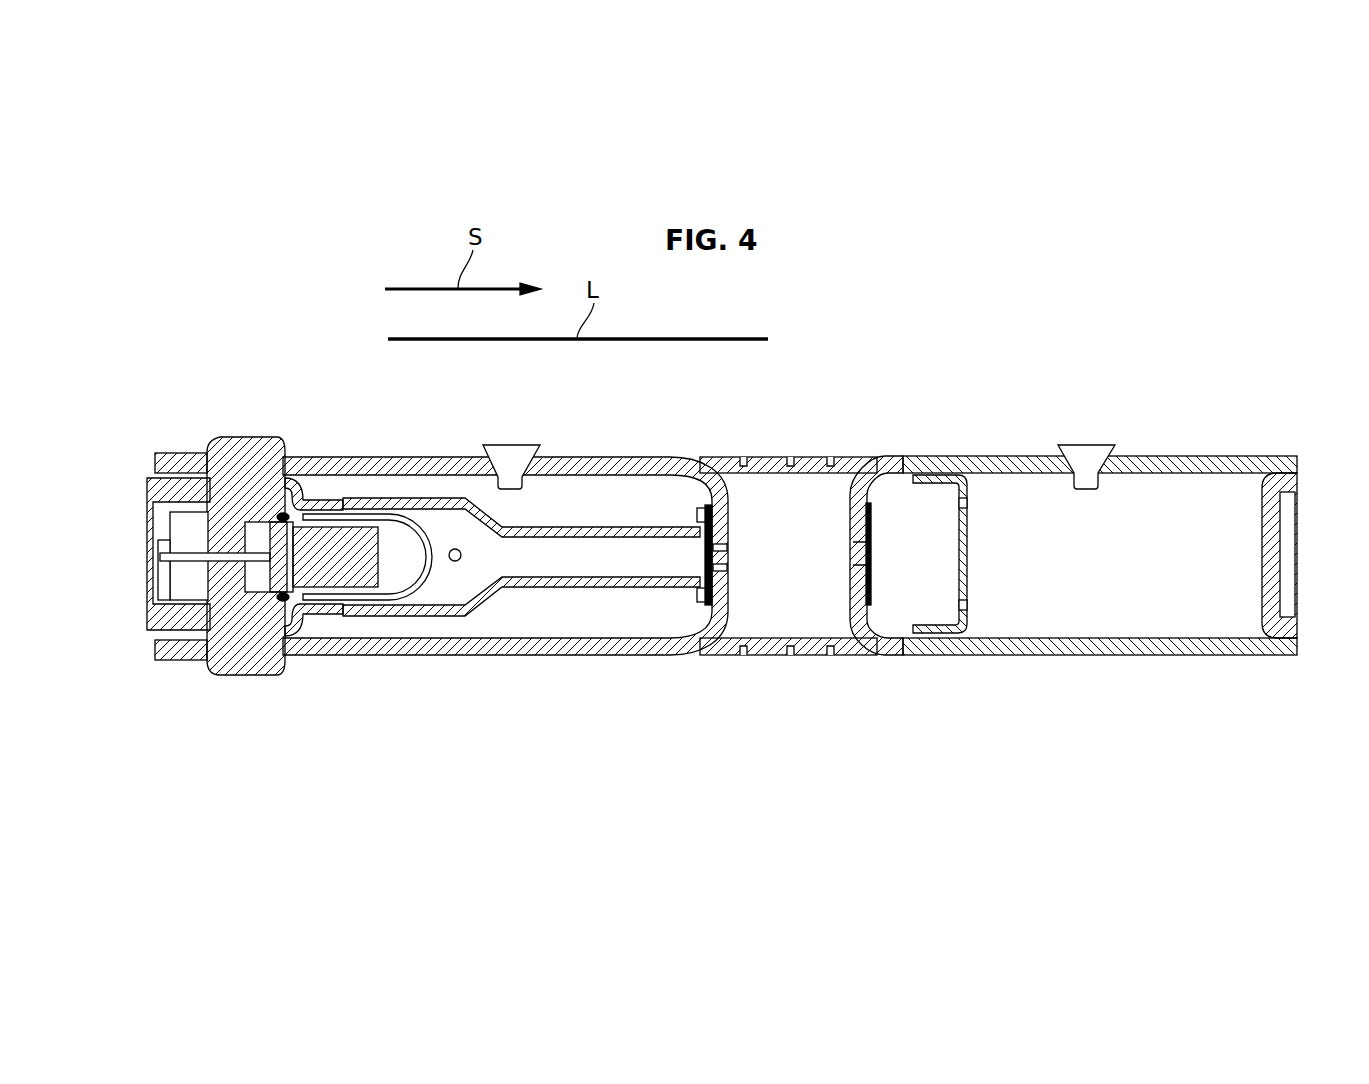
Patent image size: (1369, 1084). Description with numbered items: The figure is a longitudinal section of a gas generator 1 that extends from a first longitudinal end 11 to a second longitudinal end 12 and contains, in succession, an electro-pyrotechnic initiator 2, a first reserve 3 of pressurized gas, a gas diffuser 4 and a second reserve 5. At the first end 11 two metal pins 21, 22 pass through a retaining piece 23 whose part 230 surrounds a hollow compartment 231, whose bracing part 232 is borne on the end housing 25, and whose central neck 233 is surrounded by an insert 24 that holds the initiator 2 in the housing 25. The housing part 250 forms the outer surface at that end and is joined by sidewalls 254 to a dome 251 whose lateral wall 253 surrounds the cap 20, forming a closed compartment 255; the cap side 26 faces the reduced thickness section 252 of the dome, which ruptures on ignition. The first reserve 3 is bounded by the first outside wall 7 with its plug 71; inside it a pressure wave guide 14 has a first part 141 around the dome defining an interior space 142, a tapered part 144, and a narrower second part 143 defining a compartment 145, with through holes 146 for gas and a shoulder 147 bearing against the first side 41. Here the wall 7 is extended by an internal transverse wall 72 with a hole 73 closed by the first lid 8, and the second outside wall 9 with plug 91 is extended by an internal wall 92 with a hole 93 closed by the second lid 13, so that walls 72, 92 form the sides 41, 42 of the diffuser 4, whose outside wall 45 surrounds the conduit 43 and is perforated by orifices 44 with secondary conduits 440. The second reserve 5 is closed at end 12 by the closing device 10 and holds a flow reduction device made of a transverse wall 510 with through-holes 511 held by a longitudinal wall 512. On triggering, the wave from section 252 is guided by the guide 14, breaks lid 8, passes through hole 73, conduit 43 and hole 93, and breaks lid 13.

The gas generator 1 is at (839, 322).
The electro-pyrotechnic initiator 2 is at (312, 545).
The first reserve 3 is at (632, 622).
The gas diffuser 4 is at (862, 457).
The second reserve 5 is at (1187, 514).
The first outside wall 7 is at (648, 472).
The first lid 8 is at (698, 600).
The second outside wall 9 is at (1140, 470).
The closing device 10 is at (1292, 628).
The first longitudinal end 11 is at (150, 462).
The second longitudinal end 12 is at (1292, 465).
The second lid 13 is at (870, 473).
The pressure wave guide 14 is at (596, 518).
The cap 20 is at (383, 457).
The metal pin 21 is at (152, 578).
The metal pin 22 is at (178, 554).
The retaining piece 23 is at (225, 660).
The insert 24 is at (250, 634).
The end housing 25 is at (177, 657).
The longitudinal side of cap 26 is at (375, 475).
The first longitudinal side 41 is at (713, 592).
The second longitudinal side 42 is at (863, 520).
The inside gas passage conduit 43 is at (870, 657).
The gas exit orifice 44 is at (830, 457).
The outside surface 45 is at (735, 470).
The plug 71 is at (510, 470).
The internal transverse wall 72 is at (729, 512).
The gas passage hole 73 is at (729, 560).
The plug 91 is at (1087, 470).
The internal transverse wall 92 is at (864, 602).
The gas passage hole 93 is at (864, 557).
The first part of guide wall 141 is at (438, 500).
The interior space 142 is at (460, 515).
The second part of guide wall 143 is at (574, 566).
The tapered part 144 is at (490, 606).
The second pressure wave guide compartment 145 is at (548, 586).
The through hole 146 is at (567, 530).
The shoulder 147 is at (705, 466).
The end part 230 is at (155, 656).
The hollow compartment 231 is at (163, 478).
The bracing part 232 is at (250, 455).
The central neck 233 is at (190, 500).
The housing part 250 is at (228, 656).
The dome 251 is at (380, 600).
The reduced thickness section 252 is at (433, 600).
The lateral wall 253 is at (353, 545).
The sidewalls 254 is at (300, 614).
The closed compartment 255 is at (402, 586).
The secondary conduit 440 is at (830, 655).
The transverse wall 510 is at (970, 553).
The through-hole 511 is at (967, 503).
The longitudinal wall 512 is at (935, 636).